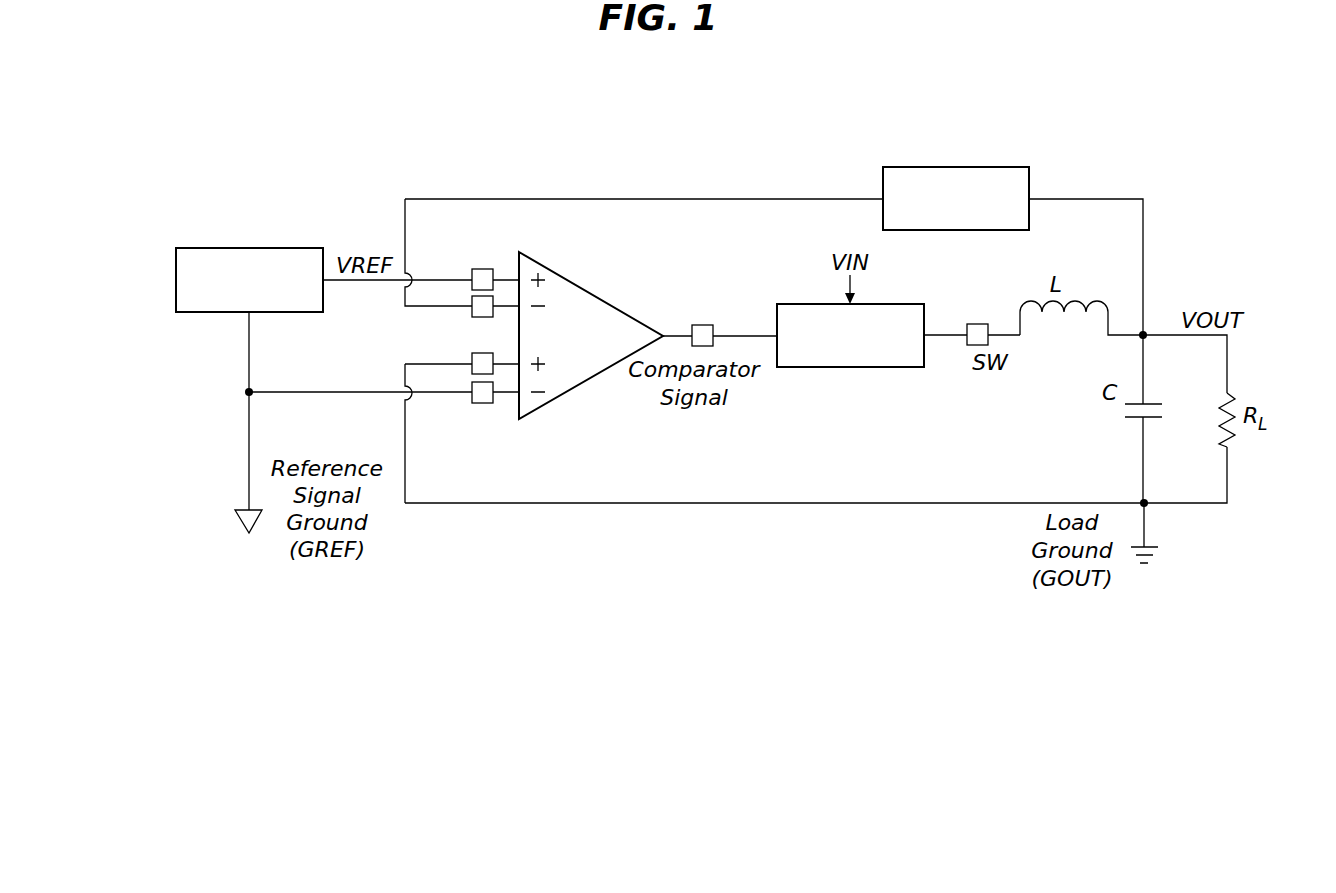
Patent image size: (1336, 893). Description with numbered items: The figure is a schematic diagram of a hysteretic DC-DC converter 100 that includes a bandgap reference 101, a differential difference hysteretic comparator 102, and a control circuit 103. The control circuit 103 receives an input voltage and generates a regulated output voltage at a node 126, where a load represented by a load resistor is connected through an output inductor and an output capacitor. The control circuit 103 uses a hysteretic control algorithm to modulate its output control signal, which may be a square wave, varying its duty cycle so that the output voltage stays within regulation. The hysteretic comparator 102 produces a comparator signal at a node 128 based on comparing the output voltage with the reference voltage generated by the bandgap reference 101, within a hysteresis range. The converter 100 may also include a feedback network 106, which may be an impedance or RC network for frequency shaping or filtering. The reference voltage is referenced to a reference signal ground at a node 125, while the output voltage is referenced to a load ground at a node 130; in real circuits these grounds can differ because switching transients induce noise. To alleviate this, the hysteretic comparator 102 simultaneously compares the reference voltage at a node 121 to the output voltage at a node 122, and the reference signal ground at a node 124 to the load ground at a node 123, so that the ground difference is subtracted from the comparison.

The hysteretic DC-DC converter 100 is at (638, 150).
The bandgap reference 101 is at (275, 248).
The differential difference hysteretic comparator 102 is at (608, 303).
The control circuit 103 is at (901, 367).
The feedback network 106 is at (937, 167).
The node 121 is at (482, 269).
The node 122 is at (482, 317).
The node 123 is at (472, 358).
The node 124 is at (482, 403).
The node 125 is at (247, 395).
The node 126 is at (1146, 333).
The node 128 is at (702, 325).
The node 130 is at (1148, 507).